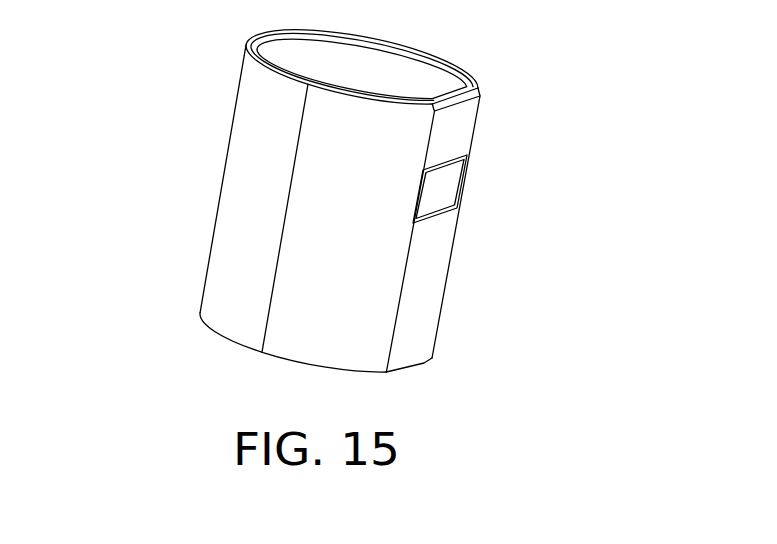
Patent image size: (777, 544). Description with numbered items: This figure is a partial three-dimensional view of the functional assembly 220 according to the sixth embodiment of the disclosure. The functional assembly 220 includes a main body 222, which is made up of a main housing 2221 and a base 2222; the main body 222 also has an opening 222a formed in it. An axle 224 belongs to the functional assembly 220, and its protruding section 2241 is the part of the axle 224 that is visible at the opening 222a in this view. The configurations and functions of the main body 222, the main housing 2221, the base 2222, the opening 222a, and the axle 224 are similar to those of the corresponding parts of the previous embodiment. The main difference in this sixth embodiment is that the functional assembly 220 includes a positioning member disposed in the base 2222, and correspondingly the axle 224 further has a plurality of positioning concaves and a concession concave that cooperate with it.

The functional assembly 220 is at (359, 191).
The main body 222 is at (262, 191).
The main housing 2221 is at (268, 108).
The base 2222 is at (303, 53).
The opening 222a is at (433, 220).
The axle 224 is at (544, 189).
The protruding section 2241 is at (442, 188).